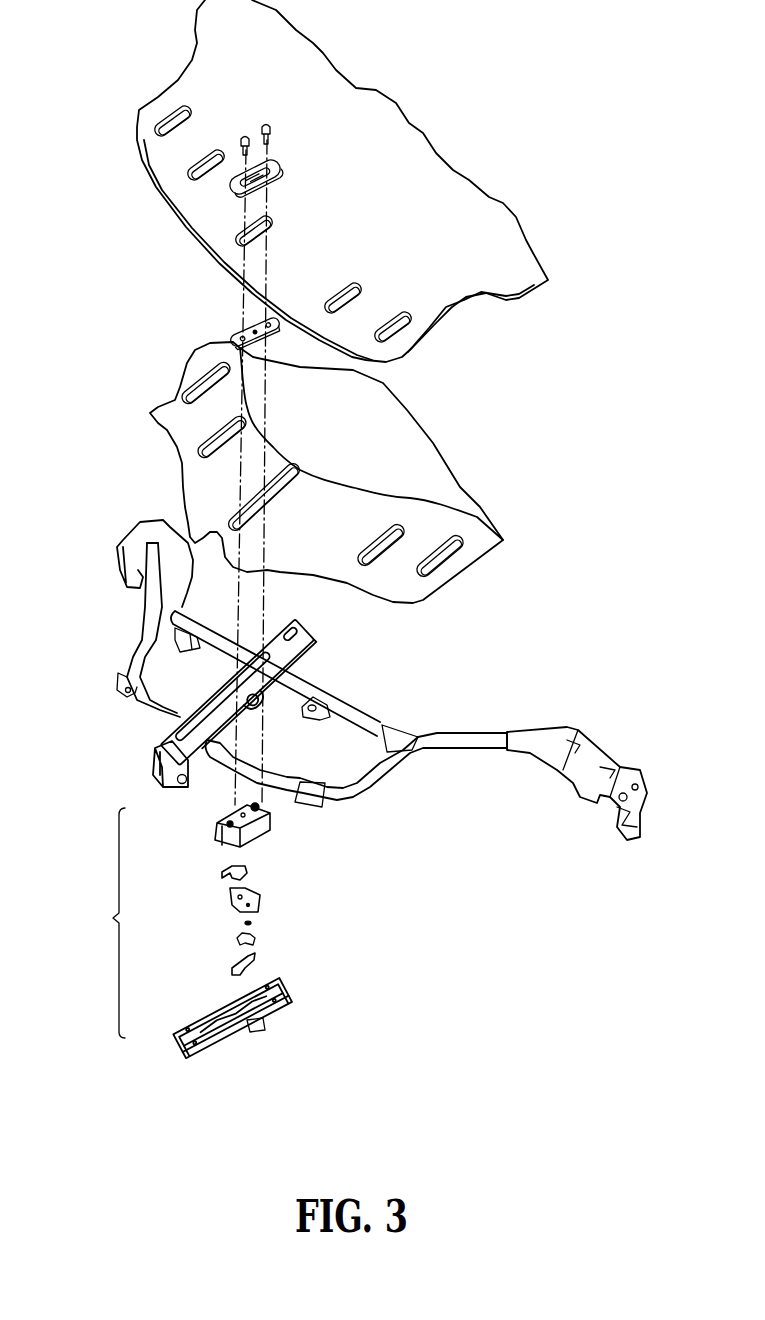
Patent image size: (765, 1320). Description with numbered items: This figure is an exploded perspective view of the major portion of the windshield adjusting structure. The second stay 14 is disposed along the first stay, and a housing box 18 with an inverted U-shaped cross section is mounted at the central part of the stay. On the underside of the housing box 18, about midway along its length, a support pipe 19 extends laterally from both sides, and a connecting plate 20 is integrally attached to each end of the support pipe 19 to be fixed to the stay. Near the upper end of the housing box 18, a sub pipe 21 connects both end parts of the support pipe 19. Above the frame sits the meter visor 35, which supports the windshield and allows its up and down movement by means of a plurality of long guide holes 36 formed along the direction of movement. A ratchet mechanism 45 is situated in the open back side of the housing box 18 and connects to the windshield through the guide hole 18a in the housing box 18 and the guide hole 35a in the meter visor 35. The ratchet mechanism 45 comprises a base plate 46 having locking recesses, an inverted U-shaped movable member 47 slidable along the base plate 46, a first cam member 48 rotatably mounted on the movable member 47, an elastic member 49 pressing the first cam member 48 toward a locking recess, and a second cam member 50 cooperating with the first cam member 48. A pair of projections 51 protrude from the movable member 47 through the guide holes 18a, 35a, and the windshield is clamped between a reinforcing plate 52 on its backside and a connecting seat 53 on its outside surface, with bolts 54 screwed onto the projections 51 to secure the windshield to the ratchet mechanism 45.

The second stay 14 is at (362, 680).
The housing box 18 is at (237, 703).
The guide hole 18a is at (170, 727).
The support pipe 19 is at (397, 767).
The connecting plate 20 is at (120, 545).
The sub pipe 21 is at (358, 698).
The meter visor 35 is at (360, 472).
The guide hole 35a is at (297, 450).
The guide holes 36 is at (150, 413).
The ratchet mechanism 45 is at (225, 930).
The base plate 46 is at (200, 1008).
The movable member 47 is at (217, 833).
The first cam member 48 is at (233, 907).
The elastic member 49 is at (217, 872).
The second cam member 50 is at (230, 960).
The projections 51 is at (262, 808).
The reinforcing plate 52 is at (232, 337).
The connecting seat 53 is at (282, 169).
The bolts 54 is at (245, 133).